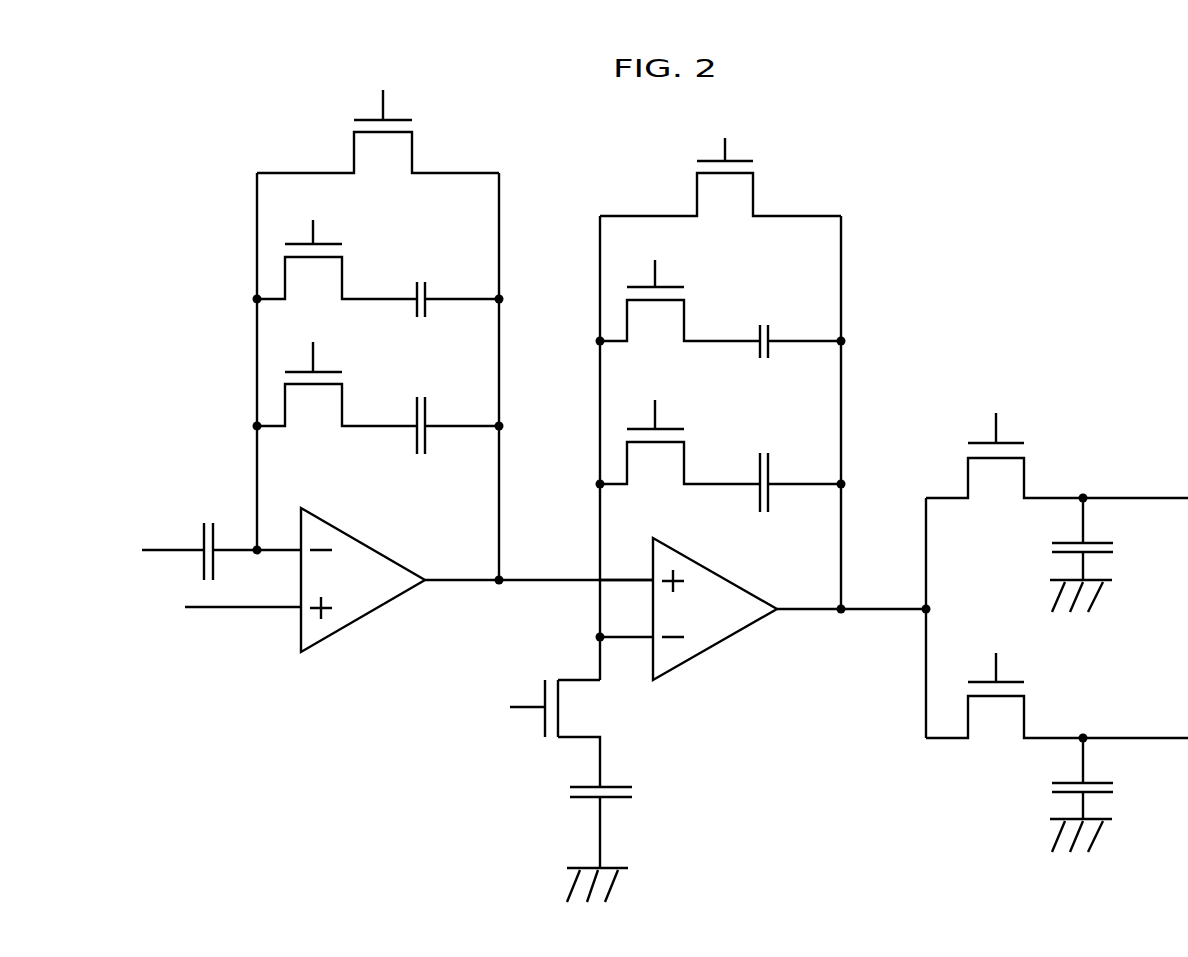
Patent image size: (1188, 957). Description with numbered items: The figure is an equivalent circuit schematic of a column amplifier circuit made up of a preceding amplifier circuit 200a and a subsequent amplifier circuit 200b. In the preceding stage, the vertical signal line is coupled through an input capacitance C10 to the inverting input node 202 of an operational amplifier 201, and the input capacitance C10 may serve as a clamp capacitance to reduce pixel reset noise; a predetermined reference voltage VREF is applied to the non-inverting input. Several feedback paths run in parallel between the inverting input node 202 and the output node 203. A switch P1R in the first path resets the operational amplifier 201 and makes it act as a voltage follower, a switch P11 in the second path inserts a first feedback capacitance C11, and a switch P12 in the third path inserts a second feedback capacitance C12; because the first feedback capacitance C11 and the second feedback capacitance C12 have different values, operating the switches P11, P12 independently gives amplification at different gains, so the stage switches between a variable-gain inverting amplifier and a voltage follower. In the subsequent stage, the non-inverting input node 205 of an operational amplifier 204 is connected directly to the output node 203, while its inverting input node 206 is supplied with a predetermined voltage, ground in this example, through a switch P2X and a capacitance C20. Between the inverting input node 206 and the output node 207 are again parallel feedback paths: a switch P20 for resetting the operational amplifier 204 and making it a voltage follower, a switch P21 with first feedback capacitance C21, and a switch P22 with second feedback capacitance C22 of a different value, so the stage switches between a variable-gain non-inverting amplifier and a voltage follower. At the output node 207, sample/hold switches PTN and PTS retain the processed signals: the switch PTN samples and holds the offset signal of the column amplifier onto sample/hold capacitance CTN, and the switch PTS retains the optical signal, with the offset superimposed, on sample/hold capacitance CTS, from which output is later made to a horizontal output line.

The preceding amplifier circuit 200a is at (242, 132).
The subsequent amplifier circuit 200b is at (843, 168).
The operational amplifier 201 is at (345, 627).
The inverting input node 202 is at (256, 546).
The output node 203 is at (498, 585).
The operational amplifier 204 is at (723, 642).
The non-inverting input node 205 is at (632, 578).
The inverting input node 206 is at (603, 655).
The output node 207 is at (843, 605).
The switch P1R is at (383, 90).
The switch P11 is at (337, 369).
The switch P12 is at (337, 243).
The input capacitance C10 is at (199, 537).
The first feedback capacitance C11 is at (452, 442).
The second feedback capacitance C12 is at (452, 315).
The reference voltage VREF is at (243, 624).
The switch P20 is at (725, 132).
The switch P21 is at (680, 427).
The switch P22 is at (680, 286).
The first feedback capacitance C21 is at (794, 500).
The second feedback capacitance C22 is at (794, 359).
The switch P2X is at (530, 733).
The capacitance C20 is at (623, 841).
The sample/hold switch PTS is at (1057, 441).
The sample/hold capacitance CTS is at (1107, 553).
The sample/hold switch PTN is at (1057, 679).
The sample/hold capacitance CTN is at (1107, 793).